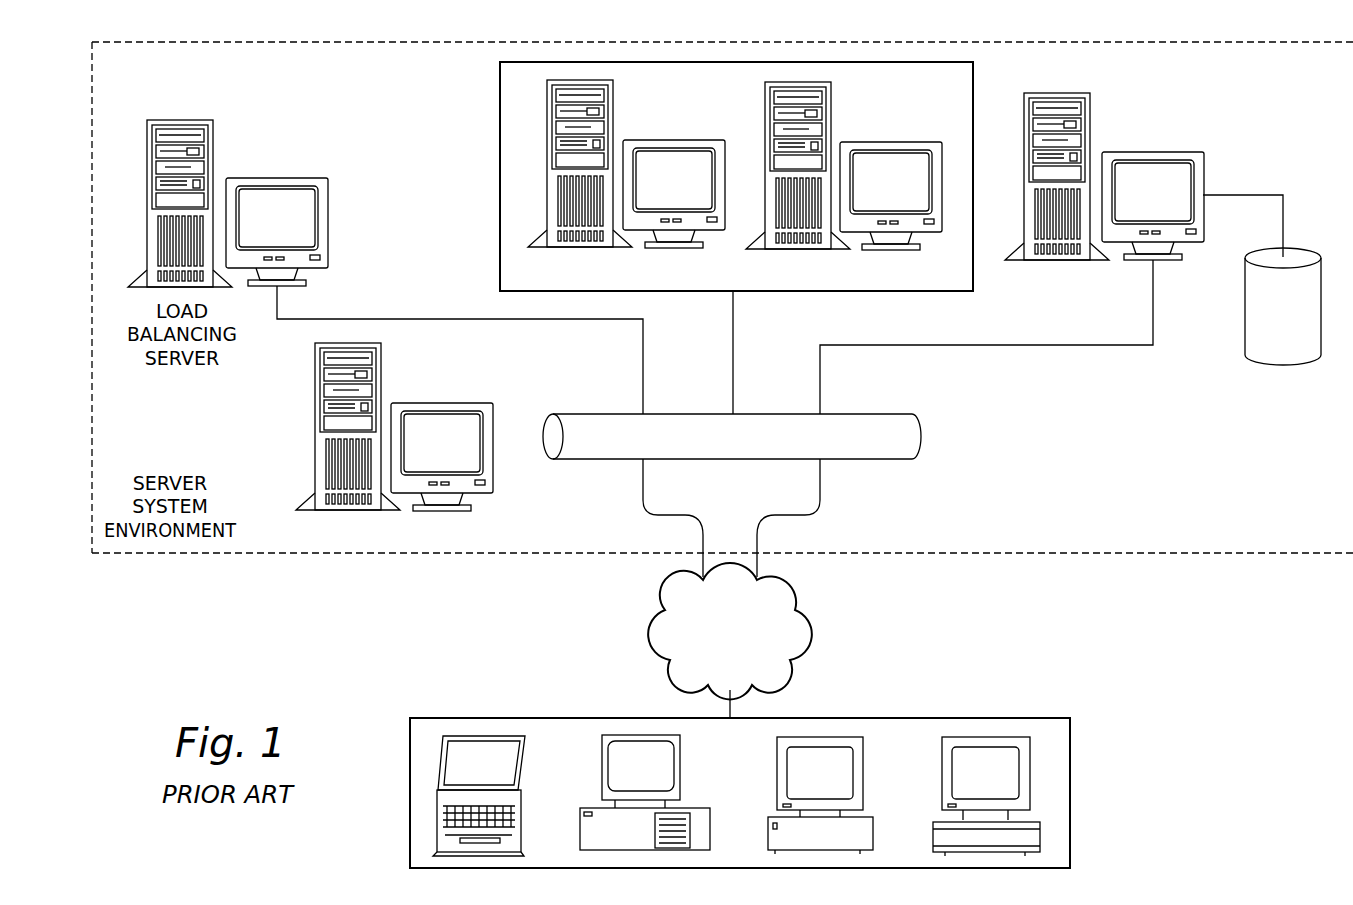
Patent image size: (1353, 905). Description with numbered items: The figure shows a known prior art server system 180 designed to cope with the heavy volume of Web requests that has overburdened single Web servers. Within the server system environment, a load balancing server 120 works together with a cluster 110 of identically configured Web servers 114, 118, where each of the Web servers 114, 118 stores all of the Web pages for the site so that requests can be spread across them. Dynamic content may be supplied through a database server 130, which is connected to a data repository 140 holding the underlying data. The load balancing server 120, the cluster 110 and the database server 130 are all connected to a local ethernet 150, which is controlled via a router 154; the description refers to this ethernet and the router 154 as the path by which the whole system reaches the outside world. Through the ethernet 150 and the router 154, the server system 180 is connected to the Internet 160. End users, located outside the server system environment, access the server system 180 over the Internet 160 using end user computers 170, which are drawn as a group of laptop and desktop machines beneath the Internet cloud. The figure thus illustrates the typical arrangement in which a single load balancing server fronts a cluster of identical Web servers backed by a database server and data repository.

The cluster 110 is at (696, 176).
The Web server 114 is at (674, 140).
The Web server 118 is at (890, 142).
The load balancing server 120 is at (273, 178).
The database server 130 is at (1153, 152).
The data repository 140 is at (1245, 328).
The ethernet 150 is at (878, 459).
The router 154 is at (441, 403).
The Internet 160 is at (806, 634).
The end user computers 170 is at (1071, 798).
The server system 180 is at (1233, 555).